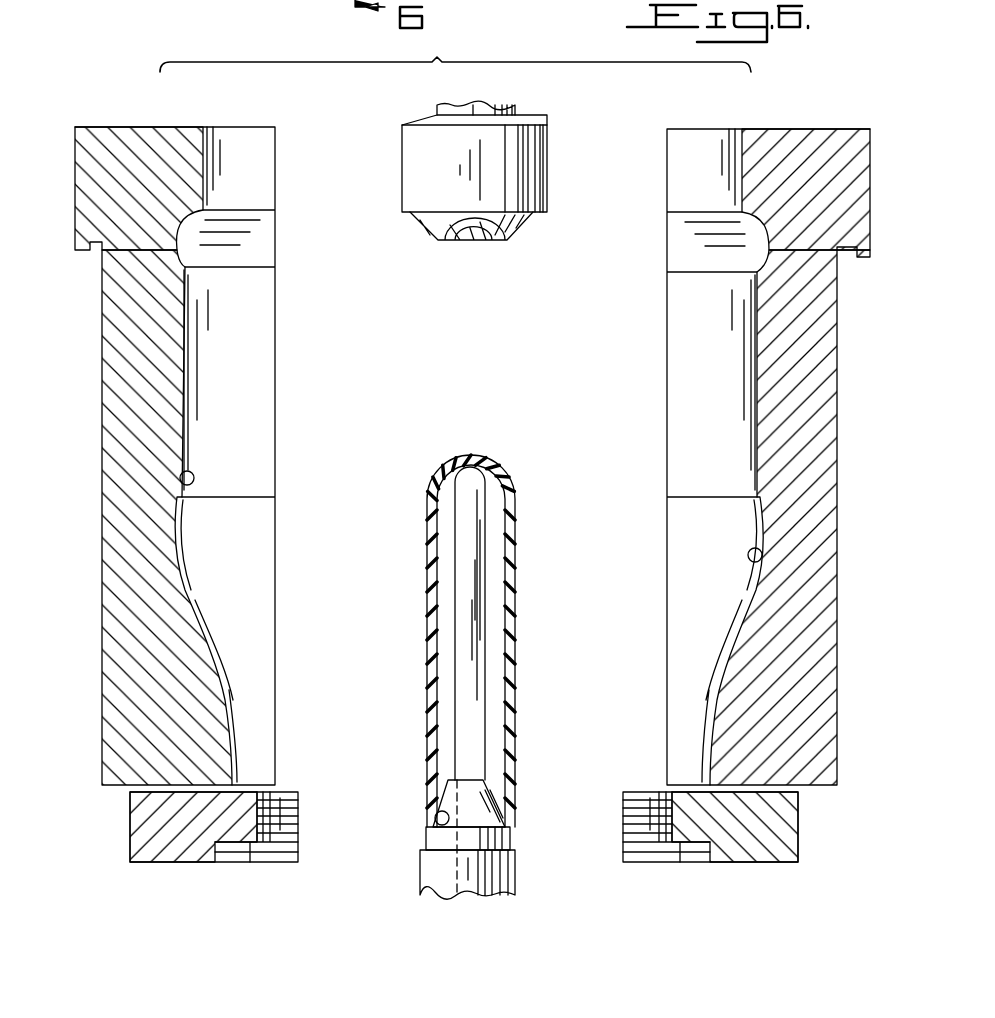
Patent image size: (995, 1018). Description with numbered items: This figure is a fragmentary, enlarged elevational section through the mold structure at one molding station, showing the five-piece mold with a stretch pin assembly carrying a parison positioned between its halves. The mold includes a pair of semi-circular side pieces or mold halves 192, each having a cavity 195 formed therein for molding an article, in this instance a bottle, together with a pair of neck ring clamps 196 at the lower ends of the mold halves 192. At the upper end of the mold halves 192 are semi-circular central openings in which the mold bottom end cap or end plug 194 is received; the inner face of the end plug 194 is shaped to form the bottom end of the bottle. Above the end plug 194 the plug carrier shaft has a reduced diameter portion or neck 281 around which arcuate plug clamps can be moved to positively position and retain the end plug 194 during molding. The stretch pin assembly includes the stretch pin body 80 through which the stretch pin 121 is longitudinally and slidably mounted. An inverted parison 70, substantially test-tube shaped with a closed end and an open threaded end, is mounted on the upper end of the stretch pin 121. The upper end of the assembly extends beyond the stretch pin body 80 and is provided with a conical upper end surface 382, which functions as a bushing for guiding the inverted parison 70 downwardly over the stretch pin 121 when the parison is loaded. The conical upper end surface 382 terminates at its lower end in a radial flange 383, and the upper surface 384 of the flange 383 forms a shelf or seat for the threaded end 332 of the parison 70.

The inverted parison 70 is at (515, 532).
The stretch pin body 80 is at (498, 873).
The stretch pin 121 is at (475, 613).
The mold halves 192 is at (112, 398).
The mold end plug 194 is at (535, 158).
The cavity 195 is at (180, 478).
The neck ring clamps 196 is at (135, 832).
The neck 281 is at (515, 108).
The threaded end 332 is at (514, 797).
The conical upper end surface 382 is at (427, 795).
The radial flange 383 is at (428, 835).
The upper surface of flange 384 is at (445, 817).